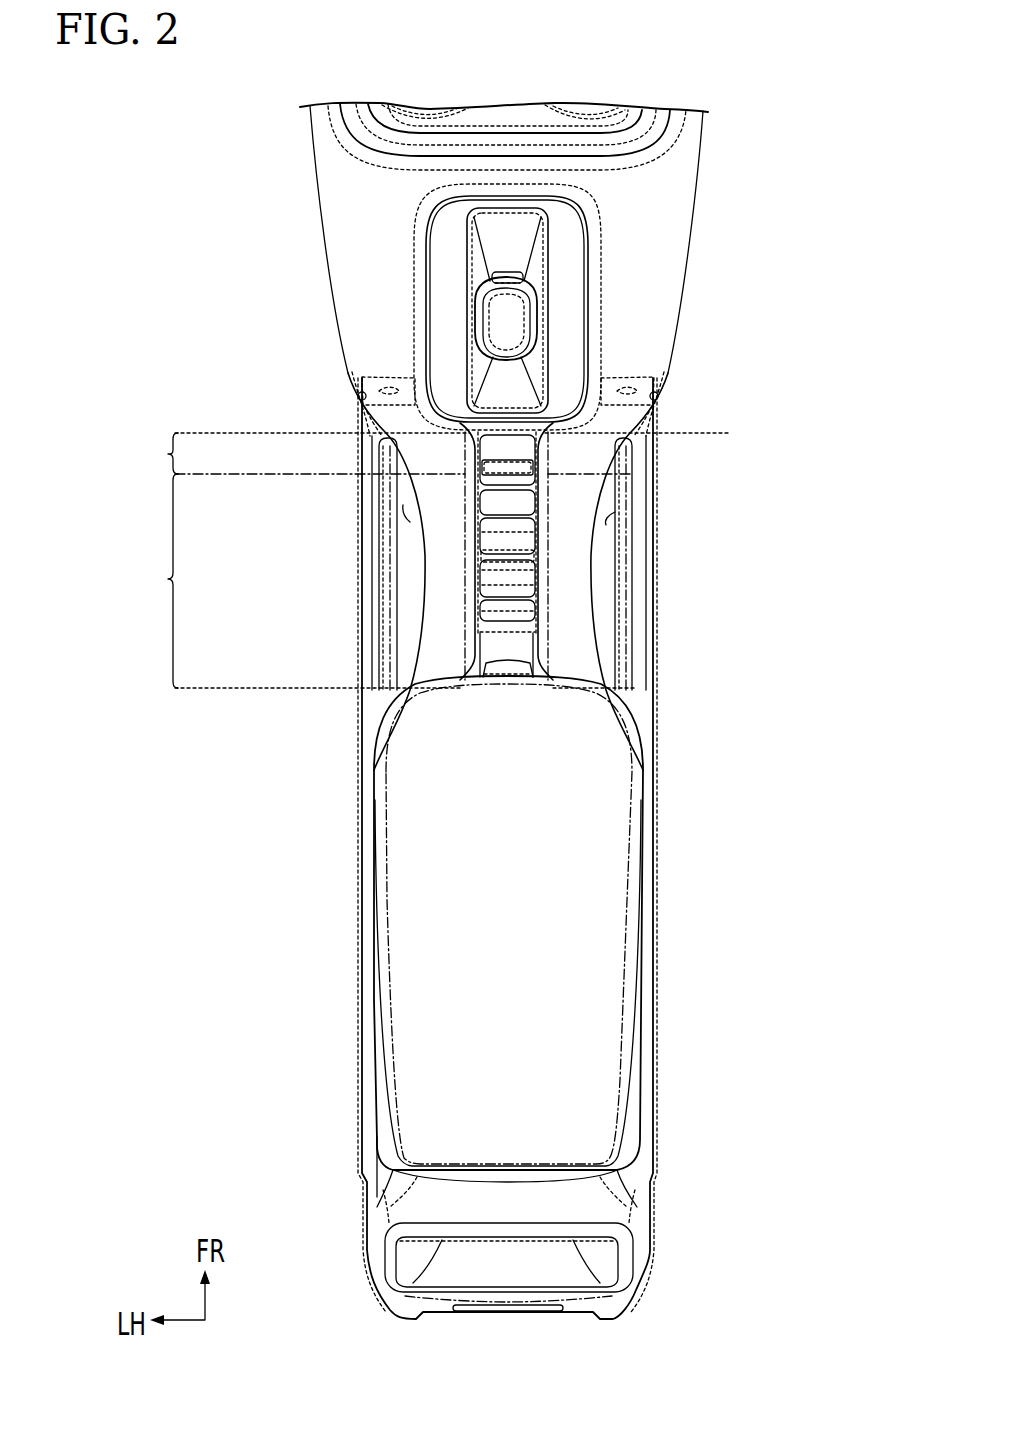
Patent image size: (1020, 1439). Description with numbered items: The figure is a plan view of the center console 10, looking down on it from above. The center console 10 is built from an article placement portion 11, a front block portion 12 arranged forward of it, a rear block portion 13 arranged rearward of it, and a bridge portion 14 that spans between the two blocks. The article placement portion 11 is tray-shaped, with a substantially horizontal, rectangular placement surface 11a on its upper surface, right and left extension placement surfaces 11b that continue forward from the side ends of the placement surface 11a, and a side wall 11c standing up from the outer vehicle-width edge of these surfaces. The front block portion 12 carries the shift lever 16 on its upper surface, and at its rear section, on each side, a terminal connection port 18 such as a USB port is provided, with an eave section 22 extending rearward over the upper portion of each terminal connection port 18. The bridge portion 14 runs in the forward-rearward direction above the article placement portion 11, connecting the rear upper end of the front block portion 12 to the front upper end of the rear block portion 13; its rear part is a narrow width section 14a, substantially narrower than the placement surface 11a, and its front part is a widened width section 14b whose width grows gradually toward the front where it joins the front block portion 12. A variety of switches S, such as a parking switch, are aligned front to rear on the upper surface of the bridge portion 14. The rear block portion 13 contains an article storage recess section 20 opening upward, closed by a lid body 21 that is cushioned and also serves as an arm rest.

The center console 10 is at (722, 328).
The article placement portion 11 is at (372, 563).
The placement surface 11a is at (405, 515).
The extension placement surface 11b is at (392, 452).
The side wall 11c is at (393, 620).
The front block portion 12 is at (690, 218).
The rear block portion 13 is at (662, 1098).
The bridge portion 14 is at (600, 553).
The narrow width section 14a is at (377, 581).
The widened width section 14b is at (423, 453).
The shift lever 16 is at (482, 297).
The terminal connection port 18 is at (358, 398).
The article storage recess section 20 is at (655, 1015).
The lid body 21 is at (594, 927).
The eave section 22 is at (352, 424).
The switches S is at (487, 577).